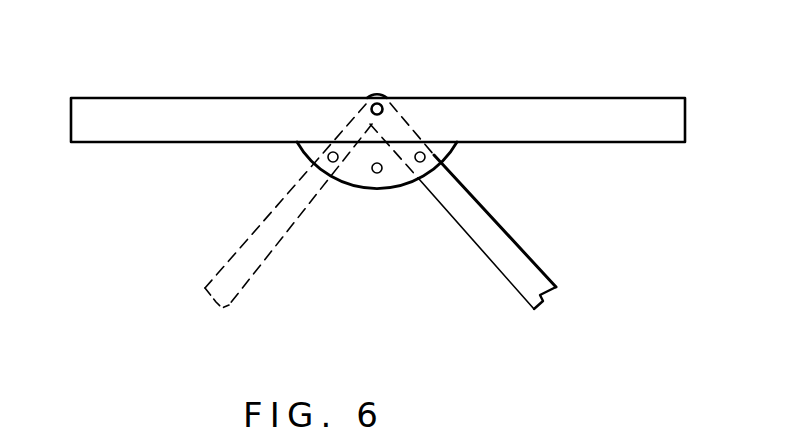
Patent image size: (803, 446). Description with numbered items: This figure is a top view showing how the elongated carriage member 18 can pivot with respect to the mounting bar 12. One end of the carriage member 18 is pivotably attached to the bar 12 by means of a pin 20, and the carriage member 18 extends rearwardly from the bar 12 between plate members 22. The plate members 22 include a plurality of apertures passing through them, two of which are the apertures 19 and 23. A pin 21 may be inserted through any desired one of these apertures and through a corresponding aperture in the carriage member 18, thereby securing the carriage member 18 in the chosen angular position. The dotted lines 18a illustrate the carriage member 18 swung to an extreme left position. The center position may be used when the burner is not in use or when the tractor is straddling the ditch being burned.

The bar 12 is at (623, 107).
The elongated carriage member 18 is at (504, 236).
The dotted lines 18a is at (253, 275).
The aperture 19 is at (378, 173).
The pin 20 is at (381, 104).
The pin 21 is at (425, 159).
The plate members 22 is at (357, 189).
The aperture 23 is at (328, 157).